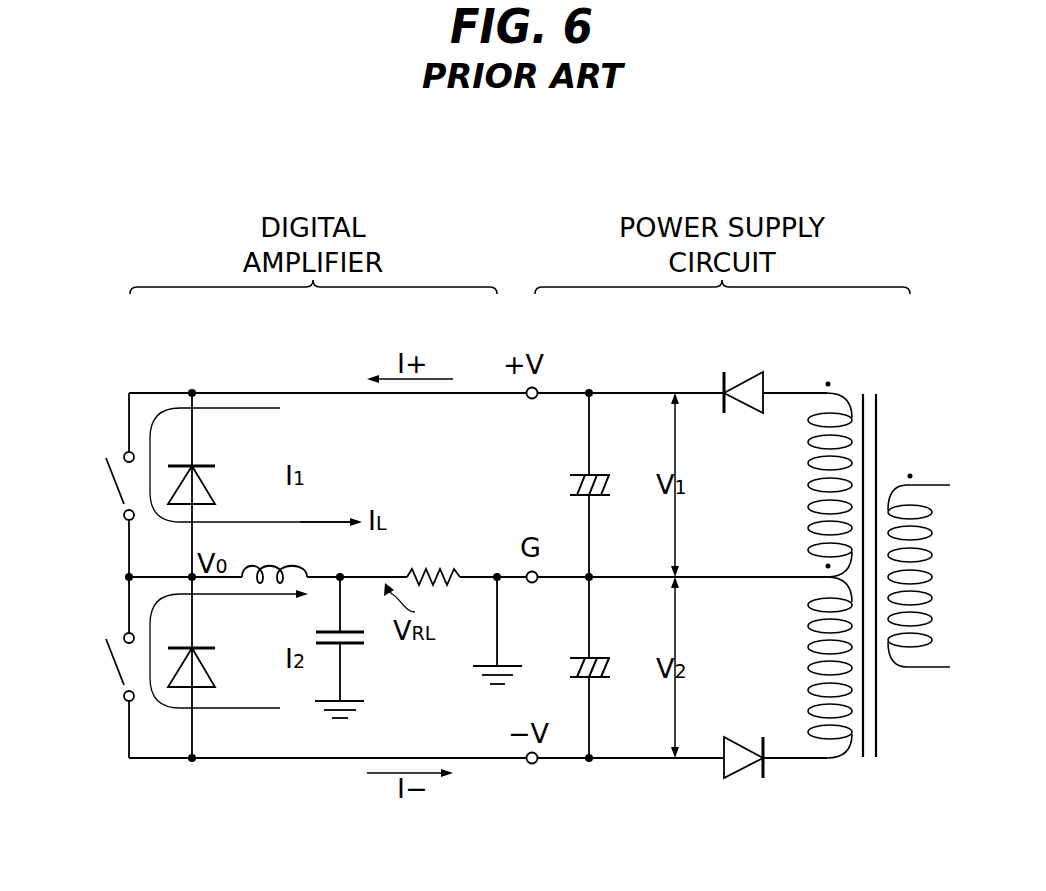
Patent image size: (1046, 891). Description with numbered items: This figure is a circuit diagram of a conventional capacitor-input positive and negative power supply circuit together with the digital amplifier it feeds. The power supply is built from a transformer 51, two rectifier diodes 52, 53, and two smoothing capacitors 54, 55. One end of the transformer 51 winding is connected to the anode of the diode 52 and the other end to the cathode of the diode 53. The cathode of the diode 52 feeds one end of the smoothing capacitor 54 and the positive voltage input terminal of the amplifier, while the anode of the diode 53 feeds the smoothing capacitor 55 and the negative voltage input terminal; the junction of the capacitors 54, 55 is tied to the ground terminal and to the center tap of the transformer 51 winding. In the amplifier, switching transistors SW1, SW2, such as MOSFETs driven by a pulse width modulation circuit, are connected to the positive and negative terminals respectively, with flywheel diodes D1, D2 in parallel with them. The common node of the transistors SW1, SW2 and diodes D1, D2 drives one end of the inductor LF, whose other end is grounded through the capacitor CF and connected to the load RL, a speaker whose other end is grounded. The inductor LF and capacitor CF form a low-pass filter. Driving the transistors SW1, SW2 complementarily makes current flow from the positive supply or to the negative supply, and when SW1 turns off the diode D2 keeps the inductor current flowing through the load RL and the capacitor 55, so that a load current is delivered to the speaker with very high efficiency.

The transformer 51 is at (868, 392).
The rectifier device 52 is at (740, 378).
The rectifier device 53 is at (746, 742).
The smoothing capacitor 54 is at (600, 475).
The smoothing capacitor 55 is at (600, 658).
The switching transistor SW1 is at (89, 486).
The switching transistor SW2 is at (89, 667).
The flywheel diode D1 is at (202, 464).
The flywheel diode D2 is at (202, 646).
The inductor LF is at (274, 556).
The capacitor CF is at (350, 646).
The load RL is at (433, 558).